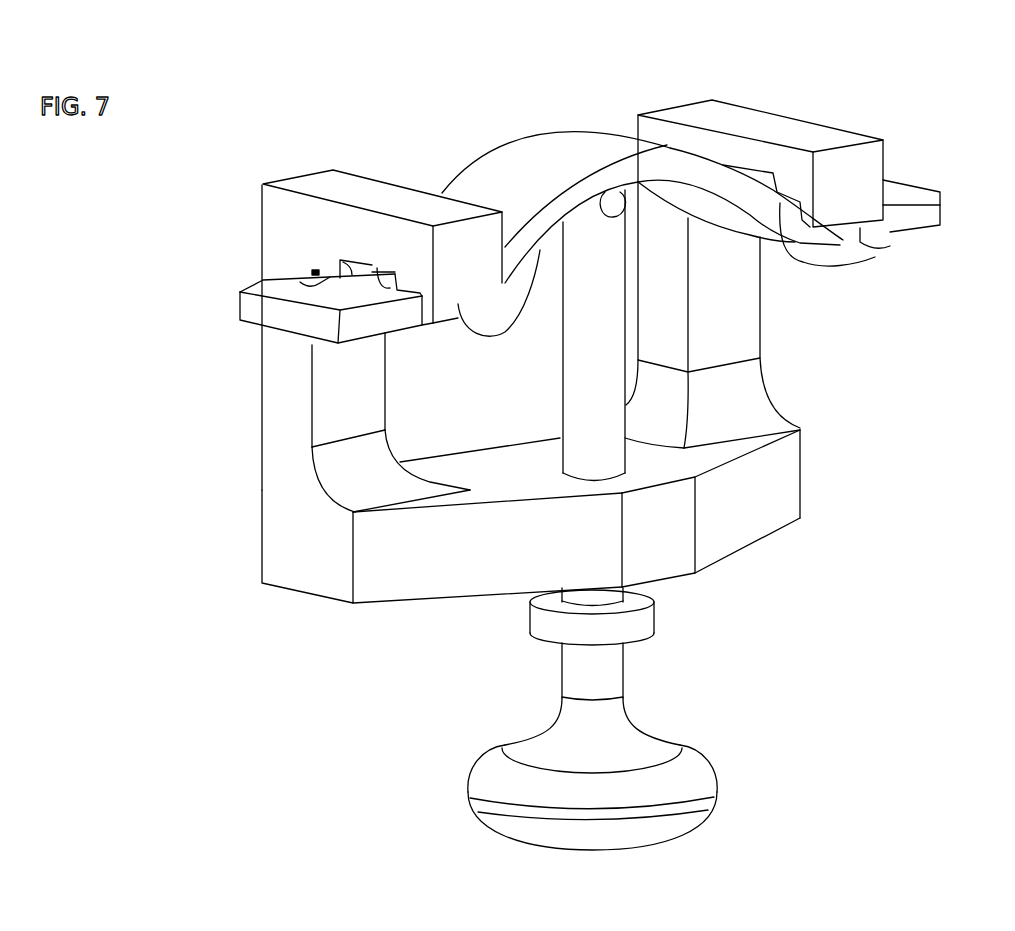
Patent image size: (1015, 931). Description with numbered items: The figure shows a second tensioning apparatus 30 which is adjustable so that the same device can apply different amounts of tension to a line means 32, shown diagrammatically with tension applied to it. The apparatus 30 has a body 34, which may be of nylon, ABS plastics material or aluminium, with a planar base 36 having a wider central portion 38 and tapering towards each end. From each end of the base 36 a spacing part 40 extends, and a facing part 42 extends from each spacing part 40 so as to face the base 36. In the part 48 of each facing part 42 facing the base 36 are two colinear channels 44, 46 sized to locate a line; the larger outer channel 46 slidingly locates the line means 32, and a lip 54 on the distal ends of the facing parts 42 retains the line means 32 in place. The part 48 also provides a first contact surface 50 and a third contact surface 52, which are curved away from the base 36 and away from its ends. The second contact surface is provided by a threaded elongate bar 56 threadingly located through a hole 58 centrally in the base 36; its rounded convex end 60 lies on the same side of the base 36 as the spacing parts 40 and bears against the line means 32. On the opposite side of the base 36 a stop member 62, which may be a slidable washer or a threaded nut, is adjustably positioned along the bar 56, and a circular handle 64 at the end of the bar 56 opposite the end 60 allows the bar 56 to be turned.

The tensioning apparatus 30 is at (425, 623).
The line means 32 is at (486, 178).
The body 34 is at (757, 515).
The base 36 is at (493, 565).
The central portion 38 is at (647, 520).
The spacing parts 40 is at (340, 373).
The facing parts 42 is at (381, 196).
The channel 44 is at (340, 262).
The outer channel 46 is at (322, 282).
The part of the facing part 48 is at (387, 266).
The first contact surface 50 is at (312, 345).
The third contact surface 52 is at (893, 247).
The lip 54 is at (540, 250).
The threaded elongate bar 56 is at (597, 415).
The hole 58 is at (806, 462).
The rounded convex end 60 is at (637, 183).
The stop member 62 is at (540, 627).
The circular handle 64 is at (680, 785).